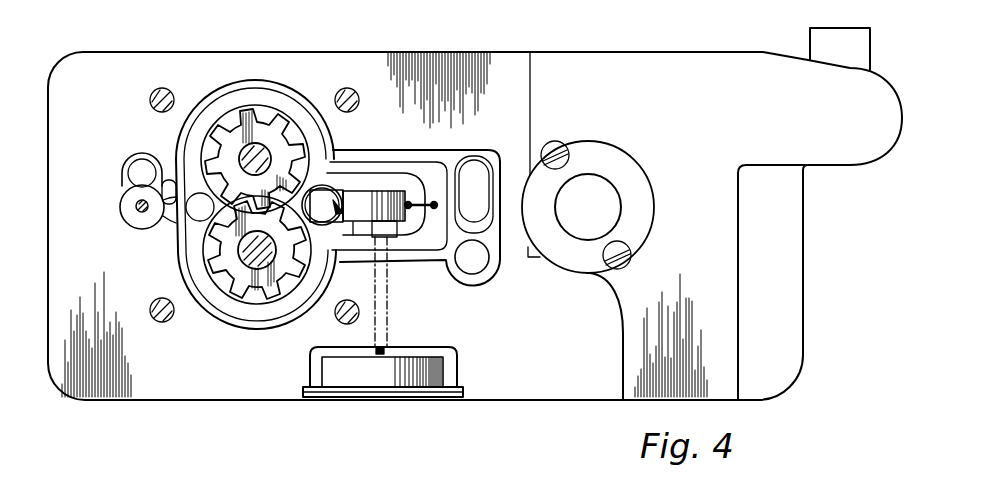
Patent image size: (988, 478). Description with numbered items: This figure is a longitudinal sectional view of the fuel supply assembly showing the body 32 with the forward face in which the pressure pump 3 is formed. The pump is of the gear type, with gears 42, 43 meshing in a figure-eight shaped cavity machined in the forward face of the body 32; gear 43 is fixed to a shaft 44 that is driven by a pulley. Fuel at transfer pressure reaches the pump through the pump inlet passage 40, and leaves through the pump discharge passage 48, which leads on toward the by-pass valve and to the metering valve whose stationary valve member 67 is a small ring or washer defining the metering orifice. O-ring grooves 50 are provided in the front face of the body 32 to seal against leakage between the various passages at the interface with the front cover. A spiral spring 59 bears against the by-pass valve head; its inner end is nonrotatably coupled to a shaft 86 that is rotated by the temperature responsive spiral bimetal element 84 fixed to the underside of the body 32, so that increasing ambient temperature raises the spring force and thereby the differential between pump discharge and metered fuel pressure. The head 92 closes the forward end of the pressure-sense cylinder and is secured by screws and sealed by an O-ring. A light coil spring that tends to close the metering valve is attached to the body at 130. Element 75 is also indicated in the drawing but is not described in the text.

The body 32 is at (50, 90).
The pressure pump 3 is at (262, 76).
The gear 42 is at (230, 112).
The gear 43 is at (255, 300).
The shaft 44 is at (250, 252).
The pump discharge passage 48 is at (198, 208).
The O-ring grooves 50 is at (316, 106).
The stationary valve member 67 is at (133, 202).
The pivot pin 75 is at (141, 208).
The pump inlet passage 40 is at (330, 174).
The spring attachment point 130 is at (428, 203).
The spiral spring 59 is at (352, 226).
The temperature responsive spiral bimetal element 84 is at (390, 373).
The shaft 86 is at (381, 352).
The head 92 is at (612, 200).